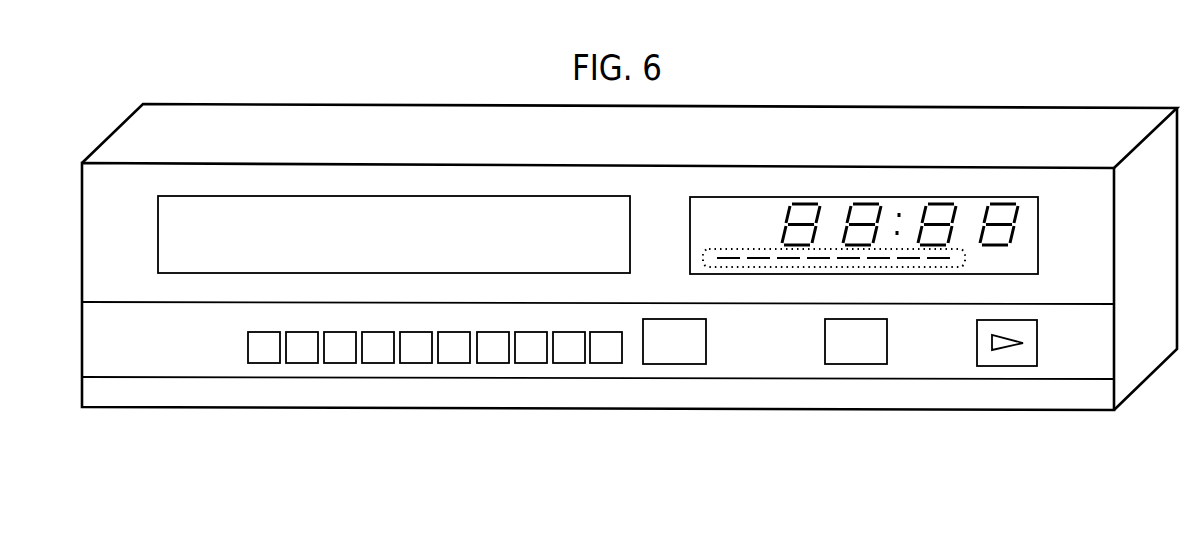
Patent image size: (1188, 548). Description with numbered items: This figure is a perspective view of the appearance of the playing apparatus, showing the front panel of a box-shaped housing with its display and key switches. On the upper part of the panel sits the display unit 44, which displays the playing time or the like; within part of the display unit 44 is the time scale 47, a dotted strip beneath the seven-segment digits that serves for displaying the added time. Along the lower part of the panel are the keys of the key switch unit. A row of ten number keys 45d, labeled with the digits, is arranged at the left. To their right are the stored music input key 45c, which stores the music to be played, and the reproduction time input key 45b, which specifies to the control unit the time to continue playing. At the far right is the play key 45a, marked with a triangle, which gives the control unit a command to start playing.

The display unit 44 is at (778, 205).
The time scale 47 is at (758, 250).
The play key 45a is at (1026, 366).
The reproduction time input key 45b is at (855, 365).
The stored music input key 45c is at (679, 353).
The number key 45d is at (412, 365).